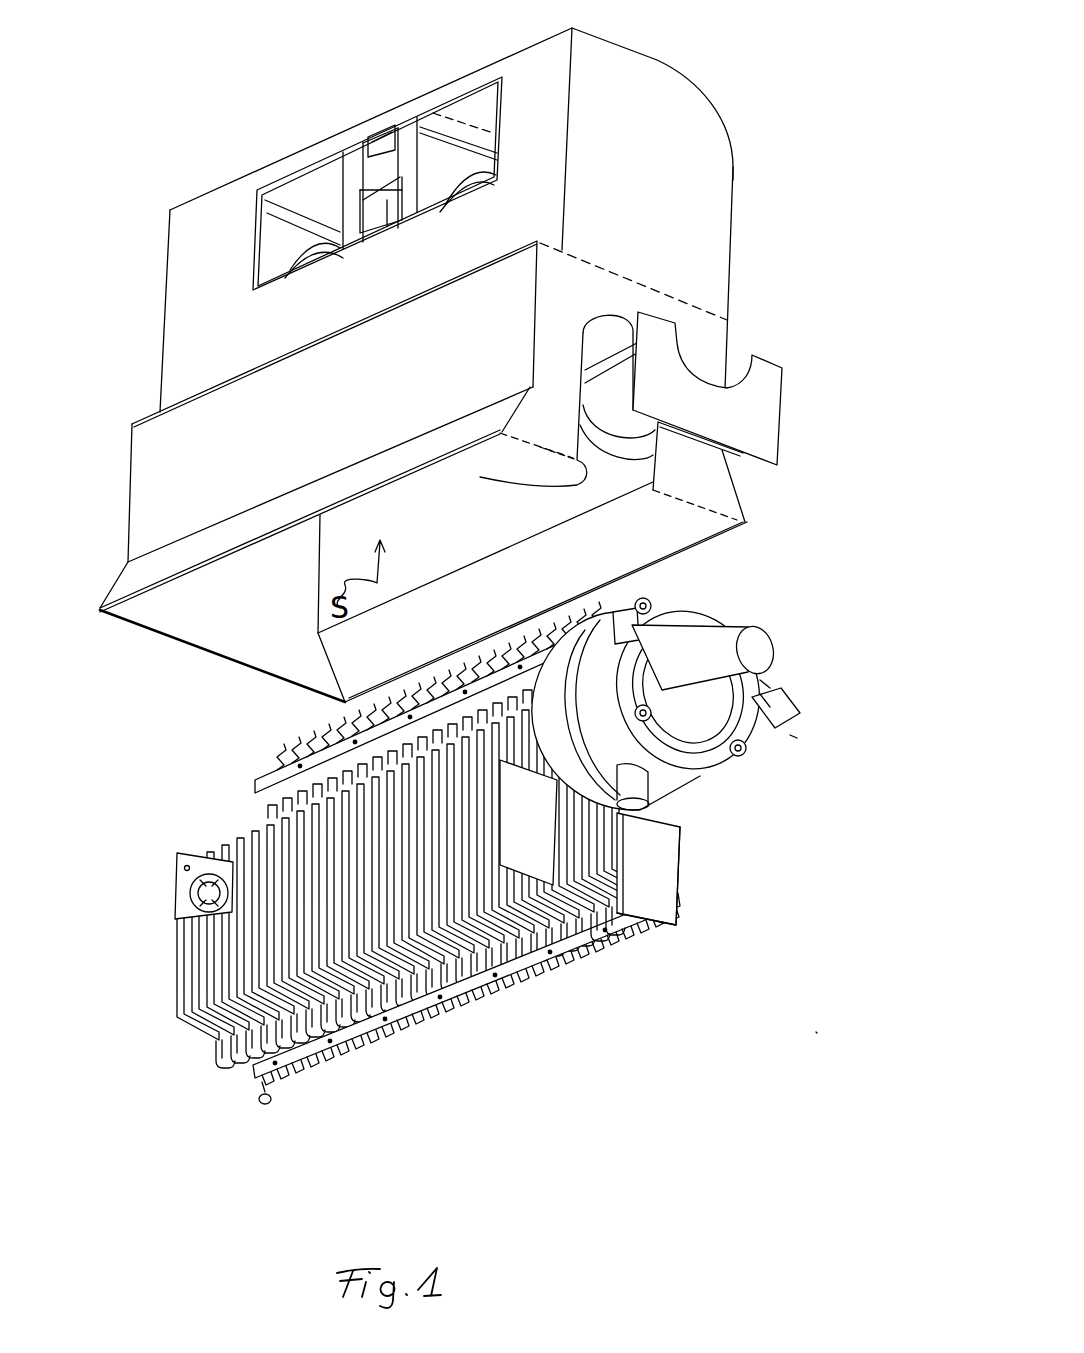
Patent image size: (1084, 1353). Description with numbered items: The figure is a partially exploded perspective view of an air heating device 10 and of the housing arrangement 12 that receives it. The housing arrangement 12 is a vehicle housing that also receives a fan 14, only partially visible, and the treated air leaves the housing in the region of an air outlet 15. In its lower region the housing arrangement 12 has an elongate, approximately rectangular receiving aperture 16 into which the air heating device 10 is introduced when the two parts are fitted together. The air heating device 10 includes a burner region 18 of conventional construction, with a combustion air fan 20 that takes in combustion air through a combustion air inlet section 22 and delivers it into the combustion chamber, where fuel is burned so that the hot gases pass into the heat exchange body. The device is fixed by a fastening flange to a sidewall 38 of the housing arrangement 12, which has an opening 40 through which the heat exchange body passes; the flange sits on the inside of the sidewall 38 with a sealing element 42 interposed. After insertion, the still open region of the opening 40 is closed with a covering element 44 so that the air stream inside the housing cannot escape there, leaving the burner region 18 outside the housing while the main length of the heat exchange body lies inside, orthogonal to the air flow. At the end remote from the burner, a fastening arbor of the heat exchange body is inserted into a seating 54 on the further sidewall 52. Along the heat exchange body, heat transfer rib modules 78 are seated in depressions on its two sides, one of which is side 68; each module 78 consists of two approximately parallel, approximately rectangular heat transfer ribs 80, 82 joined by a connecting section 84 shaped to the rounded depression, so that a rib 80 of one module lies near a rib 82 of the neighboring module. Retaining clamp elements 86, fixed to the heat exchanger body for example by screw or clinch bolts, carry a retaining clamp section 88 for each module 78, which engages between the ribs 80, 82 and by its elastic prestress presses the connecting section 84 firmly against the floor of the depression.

The air heating device 10 is at (828, 1034).
The housing arrangement 12 is at (692, 115).
The fan 14 is at (445, 193).
The air outlet 15 is at (317, 180).
The receiving aperture 16 is at (133, 613).
The burner region 18 is at (740, 588).
The combustion air fan 20 is at (682, 655).
The combustion air inlet section 22 is at (797, 723).
The sidewall 38 is at (613, 297).
The opening 40 is at (543, 485).
The sealing element 42 is at (627, 455).
The covering element 44 is at (770, 420).
The further sidewall 52 is at (223, 617).
The seating 54 is at (200, 867).
The side of the heat exchanger body 68 is at (227, 820).
The heat transfer rib module 78 is at (680, 887).
The heat transfer rib 80 is at (680, 847).
The heat transfer rib 82 is at (667, 930).
The connecting section 84 is at (627, 858).
The retaining clamp element 86 is at (590, 607).
The retaining clamp section 88 is at (295, 753).